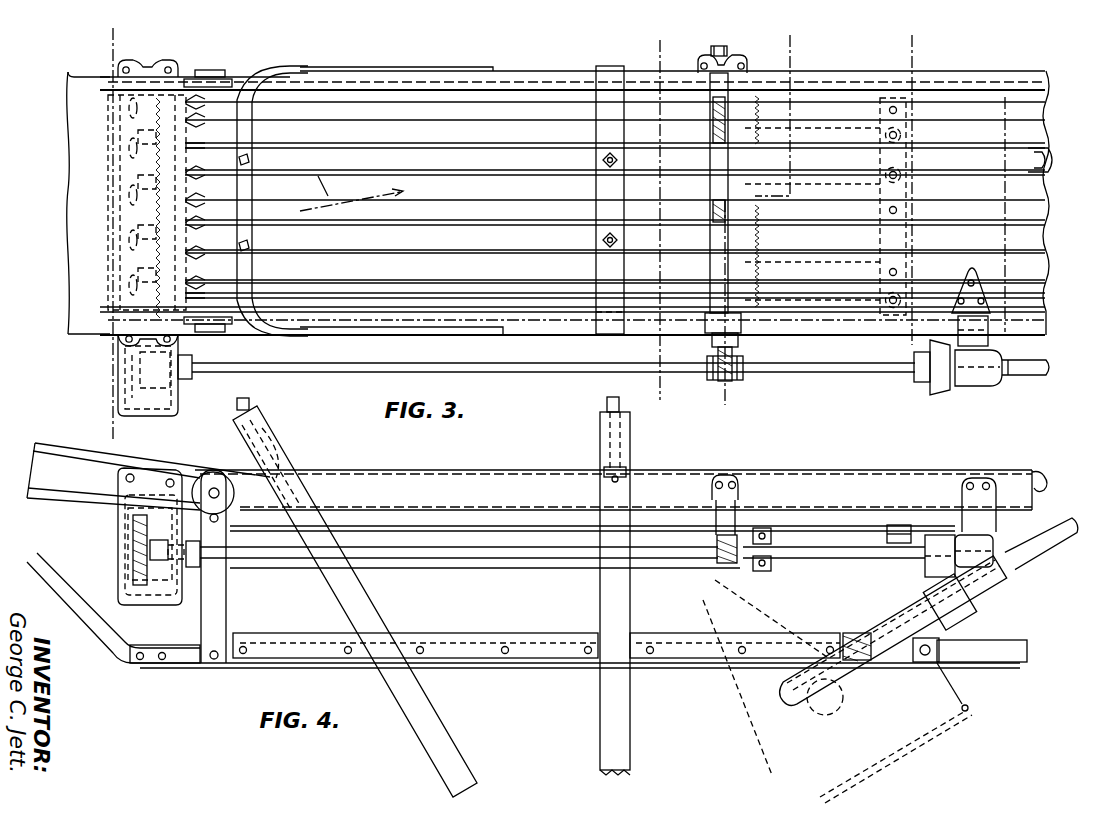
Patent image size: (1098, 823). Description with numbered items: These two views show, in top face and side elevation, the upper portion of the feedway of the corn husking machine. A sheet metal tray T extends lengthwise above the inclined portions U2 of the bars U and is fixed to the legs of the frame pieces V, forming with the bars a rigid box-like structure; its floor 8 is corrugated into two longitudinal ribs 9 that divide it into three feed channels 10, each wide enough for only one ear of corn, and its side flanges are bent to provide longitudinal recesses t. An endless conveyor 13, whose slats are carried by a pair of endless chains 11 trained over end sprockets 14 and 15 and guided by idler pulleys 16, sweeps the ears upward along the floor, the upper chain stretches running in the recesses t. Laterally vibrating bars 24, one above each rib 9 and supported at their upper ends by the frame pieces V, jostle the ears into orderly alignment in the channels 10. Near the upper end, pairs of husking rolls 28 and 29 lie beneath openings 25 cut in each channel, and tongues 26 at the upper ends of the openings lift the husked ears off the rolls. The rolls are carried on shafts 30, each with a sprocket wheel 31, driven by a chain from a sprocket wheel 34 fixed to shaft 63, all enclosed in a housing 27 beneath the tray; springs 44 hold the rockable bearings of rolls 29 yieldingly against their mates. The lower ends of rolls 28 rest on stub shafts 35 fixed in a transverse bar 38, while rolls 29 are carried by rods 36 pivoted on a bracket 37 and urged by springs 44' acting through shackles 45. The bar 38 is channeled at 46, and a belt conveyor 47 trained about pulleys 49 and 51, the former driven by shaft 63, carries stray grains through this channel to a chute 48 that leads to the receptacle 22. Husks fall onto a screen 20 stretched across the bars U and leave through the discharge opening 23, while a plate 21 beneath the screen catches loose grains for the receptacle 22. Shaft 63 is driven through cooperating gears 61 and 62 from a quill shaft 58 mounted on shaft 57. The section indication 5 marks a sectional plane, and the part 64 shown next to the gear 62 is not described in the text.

In FIG. 3, the section line 5- 5 is at (132, 42).
In FIG. 3, the floor 8 is at (88, 248).
In FIG. 3, the longitudinal ribs 9 is at (1050, 168).
In FIG. 3, the longitudinal feed channels 10 is at (1040, 121).
In FIG. 3, the endless chains 11 is at (1027, 118).
In FIG. 3, the endless conveyor 13 is at (640, 43).
In FIG. 3, the end sprocket 14 is at (772, 42).
In FIG. 3, the end sprocket 15 is at (892, 42).
In FIG. 3, the idler pulleys 16 is at (226, 84).
In FIG. 4, the idler pulleys 16 is at (211, 474).
In FIG. 4, the screen 20 is at (856, 645).
In FIG. 4, the plate 21 is at (290, 664).
In FIG. 4, the receptacle 22 is at (732, 698).
In FIG. 4, the discharge opening 23 is at (975, 660).
In FIG. 3, the laterally vibrating bars 24 is at (382, 237).
In FIG. 4, the laterally vibrating bars 24 is at (1038, 476).
In FIG. 3, the opening 25 is at (407, 270).
In FIG. 3, the tongues 26 is at (196, 167).
In FIG. 3, the housing 27 is at (120, 350).
In FIG. 4, the housing 27 is at (170, 588).
In FIG. 3, the husking rolls 28 is at (470, 268).
In FIG. 3, the husking rolls 29 is at (553, 282).
In FIG. 4, the husking rolls 29 is at (440, 569).
In FIG. 3, the shafts 30 is at (196, 268).
In FIG. 3, the sprocket wheel 31 is at (118, 202).
In FIG. 3, the sprocket wheel 34 is at (138, 386).
In FIG. 4, the sprocket wheel 34 is at (138, 547).
In FIG. 3, the stub shafts 35 is at (762, 272).
In FIG. 3, the rod 36 is at (828, 134).
In FIG. 4, the rod 36 is at (816, 544).
In FIG. 3, the transverse bracket 37 is at (880, 194).
In FIG. 4, the transverse bracket 37 is at (895, 524).
In FIG. 3, the transverse bar 38 is at (738, 346).
In FIG. 4, the transverse bar 38 is at (736, 508).
In FIG. 3, the springs 44 is at (126, 202).
In FIG. 3, the springs 44' is at (812, 214).
In FIG. 4, the shackles 45 is at (772, 563).
In FIG. 4, the channel 46 is at (718, 535).
In FIG. 3, the endless belt conveyor 47 is at (718, 46).
In FIG. 3, the pulley 49 is at (736, 58).
In FIG. 4, the chute 48 is at (722, 600).
In FIG. 3, the pulley 51 is at (714, 381).
In FIG. 3, the shaft 57 is at (1038, 378).
In FIG. 4, the shaft 57 is at (1052, 548).
In FIG. 4, the quill shaft 58 is at (857, 664).
In FIG. 4, the gear 61 is at (972, 617).
In FIG. 3, the gear 62 is at (976, 386).
In FIG. 4, the gear 62 is at (994, 540).
In FIG. 3, the shaft 63 is at (342, 366).
In FIG. 4, the shaft 63 is at (522, 559).
In FIG. 3, the flange 64 is at (935, 386).
In FIG. 4, the flange 64 is at (945, 566).
In FIG. 3, the tray T is at (980, 88).
In FIG. 4, the tray T is at (405, 478).
In FIG. 3, the longitudinal recesses t is at (548, 74).
In FIG. 4, the longitudinal recesses t is at (420, 517).
In FIG. 3, the frame pieces V is at (240, 140).
In FIG. 4, the frame pieces V is at (290, 492).
In FIG. 4, the bars U is at (190, 664).
In FIG. 4, the inclined portions U2 is at (552, 664).